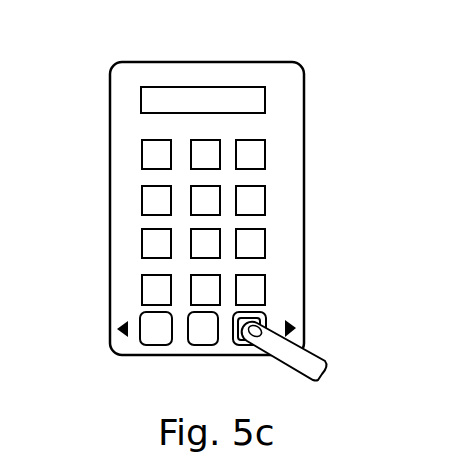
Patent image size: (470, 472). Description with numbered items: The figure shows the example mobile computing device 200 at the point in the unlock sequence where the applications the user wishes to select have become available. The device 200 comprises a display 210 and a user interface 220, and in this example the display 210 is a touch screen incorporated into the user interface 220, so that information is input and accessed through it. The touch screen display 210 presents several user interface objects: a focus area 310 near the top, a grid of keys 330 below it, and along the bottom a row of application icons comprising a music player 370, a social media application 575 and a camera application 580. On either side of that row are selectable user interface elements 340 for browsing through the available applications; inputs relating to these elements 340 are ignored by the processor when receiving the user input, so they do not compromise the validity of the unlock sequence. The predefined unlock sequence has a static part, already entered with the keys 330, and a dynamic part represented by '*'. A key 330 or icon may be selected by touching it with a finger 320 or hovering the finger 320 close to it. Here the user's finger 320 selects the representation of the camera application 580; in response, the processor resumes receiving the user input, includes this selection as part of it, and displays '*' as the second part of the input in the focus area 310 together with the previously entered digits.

The mobile computing device 200 is at (189, 206).
The display 210 is at (160, 206).
The user interface 220 is at (124, 80).
The focus area 310 is at (265, 114).
The finger 320 is at (320, 381).
The keys 330 is at (141, 151).
The selectable user interface element 340 is at (112, 331).
The music player 370 is at (140, 340).
The social media application 575 is at (187, 346).
The camera application 580 is at (243, 346).